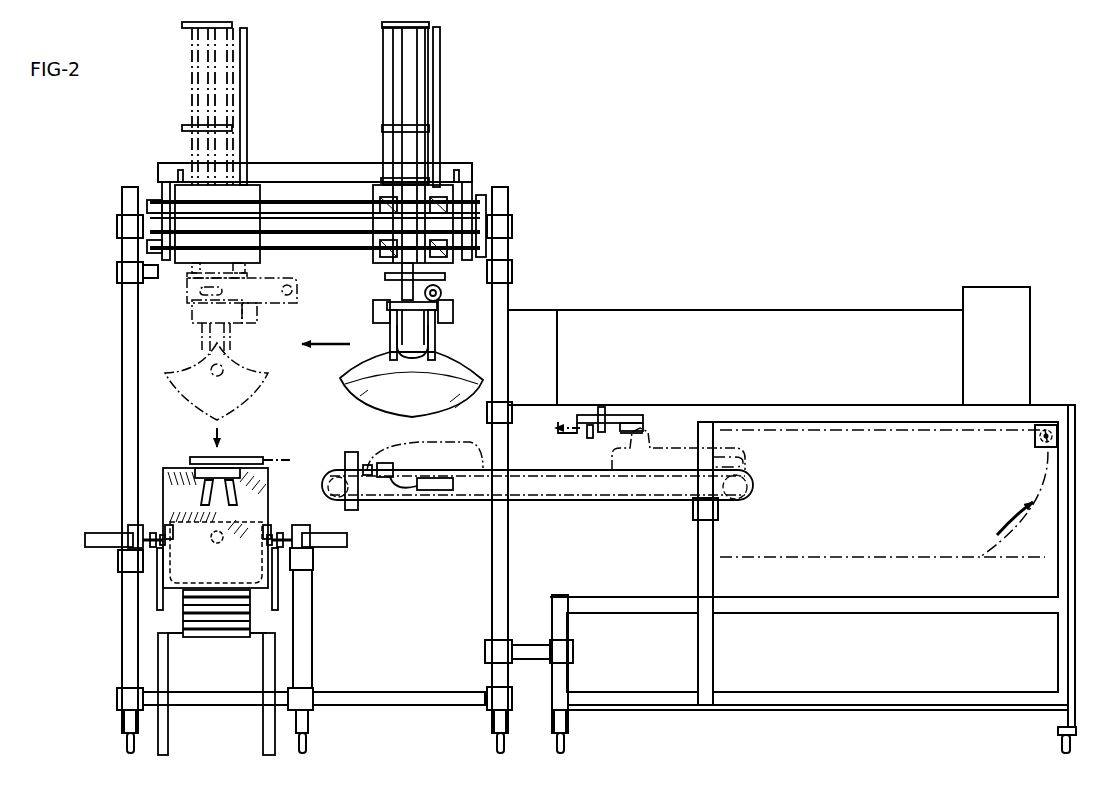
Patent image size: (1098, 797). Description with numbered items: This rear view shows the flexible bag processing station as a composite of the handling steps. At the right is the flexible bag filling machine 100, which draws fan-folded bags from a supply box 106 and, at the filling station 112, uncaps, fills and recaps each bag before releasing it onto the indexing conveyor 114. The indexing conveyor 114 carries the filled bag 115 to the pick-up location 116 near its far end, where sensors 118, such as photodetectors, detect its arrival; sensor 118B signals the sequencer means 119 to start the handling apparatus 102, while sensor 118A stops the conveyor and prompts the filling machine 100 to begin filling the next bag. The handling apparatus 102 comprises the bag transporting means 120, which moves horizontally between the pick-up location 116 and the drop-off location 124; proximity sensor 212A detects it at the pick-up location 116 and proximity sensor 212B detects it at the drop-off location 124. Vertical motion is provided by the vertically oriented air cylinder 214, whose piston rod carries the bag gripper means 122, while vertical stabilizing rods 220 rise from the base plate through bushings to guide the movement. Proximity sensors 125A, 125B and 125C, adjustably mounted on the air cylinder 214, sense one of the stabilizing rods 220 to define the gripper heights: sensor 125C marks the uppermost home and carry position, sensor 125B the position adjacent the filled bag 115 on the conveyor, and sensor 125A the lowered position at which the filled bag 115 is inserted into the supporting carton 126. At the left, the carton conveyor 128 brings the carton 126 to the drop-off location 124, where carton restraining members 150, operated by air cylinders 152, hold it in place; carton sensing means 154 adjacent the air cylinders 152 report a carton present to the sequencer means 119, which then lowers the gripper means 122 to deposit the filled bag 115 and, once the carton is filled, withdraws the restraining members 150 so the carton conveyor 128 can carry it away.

The flexible bag filling machine 100 is at (710, 293).
The handling apparatus 102 is at (498, 141).
The supply box 106 is at (815, 570).
The filling station 112 is at (627, 482).
The indexing conveyor 114 is at (518, 503).
The filled bag 115 is at (345, 383).
The pick-up location 116 is at (484, 441).
The sensors 118 is at (373, 494).
The sensor 118A is at (360, 465).
The sensor 118B is at (393, 460).
The sequencer means 119 is at (528, 318).
The bag transporting means 120 is at (367, 266).
The bag gripper means 122 is at (367, 305).
The drop-off location 124 is at (283, 578).
The proximity sensor 125A is at (381, 170).
The proximity sensor 125B is at (383, 126).
The height sensor 125C is at (380, 21).
The supporting carton 126 is at (252, 537).
The carton conveyor 128 is at (208, 638).
The carton restraining members 150 is at (172, 552).
The air cylinders 152 is at (100, 544).
The carton sensing means 154 is at (130, 525).
The proximity sensor 212A is at (455, 175).
The proximity sensor 212B is at (178, 178).
The air cylinder 214 is at (410, 43).
The vertical stabilizing rods 220 is at (390, 76).